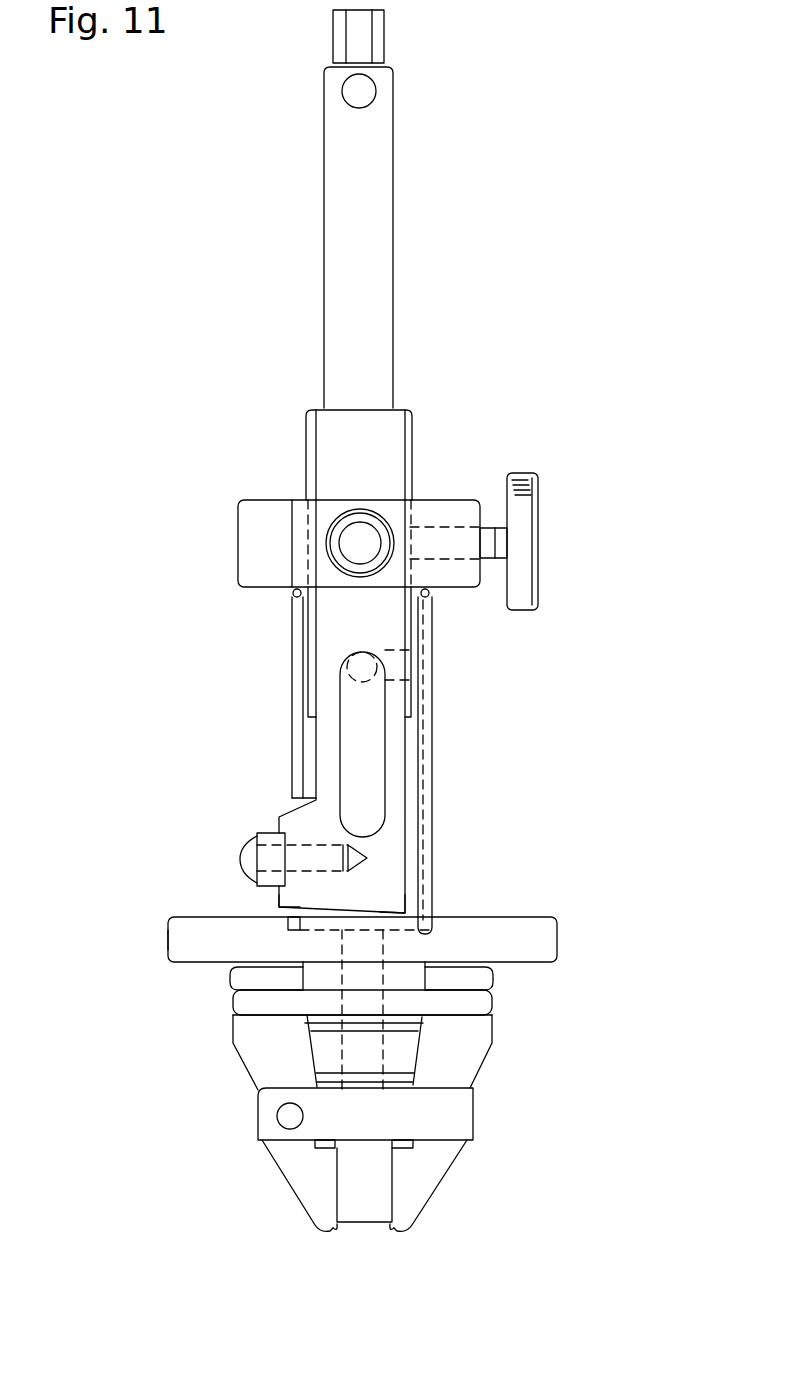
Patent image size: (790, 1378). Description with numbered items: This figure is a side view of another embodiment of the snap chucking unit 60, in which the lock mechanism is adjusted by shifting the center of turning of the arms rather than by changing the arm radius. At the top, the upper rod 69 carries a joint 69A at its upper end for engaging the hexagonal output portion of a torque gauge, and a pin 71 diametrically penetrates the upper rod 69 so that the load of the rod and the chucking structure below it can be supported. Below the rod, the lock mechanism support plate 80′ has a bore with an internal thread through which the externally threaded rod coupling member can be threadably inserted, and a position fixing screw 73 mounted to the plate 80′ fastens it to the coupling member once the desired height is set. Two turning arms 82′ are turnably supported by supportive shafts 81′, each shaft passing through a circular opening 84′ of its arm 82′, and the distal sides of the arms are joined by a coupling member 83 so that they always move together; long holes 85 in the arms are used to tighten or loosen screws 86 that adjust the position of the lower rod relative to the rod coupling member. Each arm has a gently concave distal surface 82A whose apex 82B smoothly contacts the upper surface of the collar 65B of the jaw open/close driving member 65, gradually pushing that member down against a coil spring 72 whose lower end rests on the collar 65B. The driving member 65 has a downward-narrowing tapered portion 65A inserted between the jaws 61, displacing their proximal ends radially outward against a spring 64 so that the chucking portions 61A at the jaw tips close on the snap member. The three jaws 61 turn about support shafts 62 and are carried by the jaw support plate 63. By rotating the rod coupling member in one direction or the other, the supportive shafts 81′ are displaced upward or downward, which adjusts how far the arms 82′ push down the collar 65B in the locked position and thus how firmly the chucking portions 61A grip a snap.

The snap chucking unit 60 is at (535, 410).
The jaw 61 is at (493, 1043).
The chucking portion 61A is at (337, 1237).
The support shaft 62 is at (277, 1110).
The jaw support plate 63 is at (473, 1112).
The spring 64 is at (493, 997).
The jaw open/close driving member 65 is at (560, 923).
The tapered portion 65A is at (325, 1057).
The collar 65B is at (168, 922).
The upper rod 69 is at (395, 221).
The joint 69A is at (389, 33).
The pin 71 is at (342, 88).
The spring 72 is at (433, 713).
The position fixing screw 73 is at (540, 494).
The lock mechanism support plate 80′ is at (260, 500).
The supportive shaft 81′ is at (368, 533).
The turning arm 82′ is at (405, 826).
The distal surface 82A is at (283, 907).
The apex 82B is at (385, 928).
The coupling member 83 is at (268, 833).
The circular opening 84′ is at (350, 578).
The long hole 85 is at (384, 710).
The screw 86 is at (367, 669).